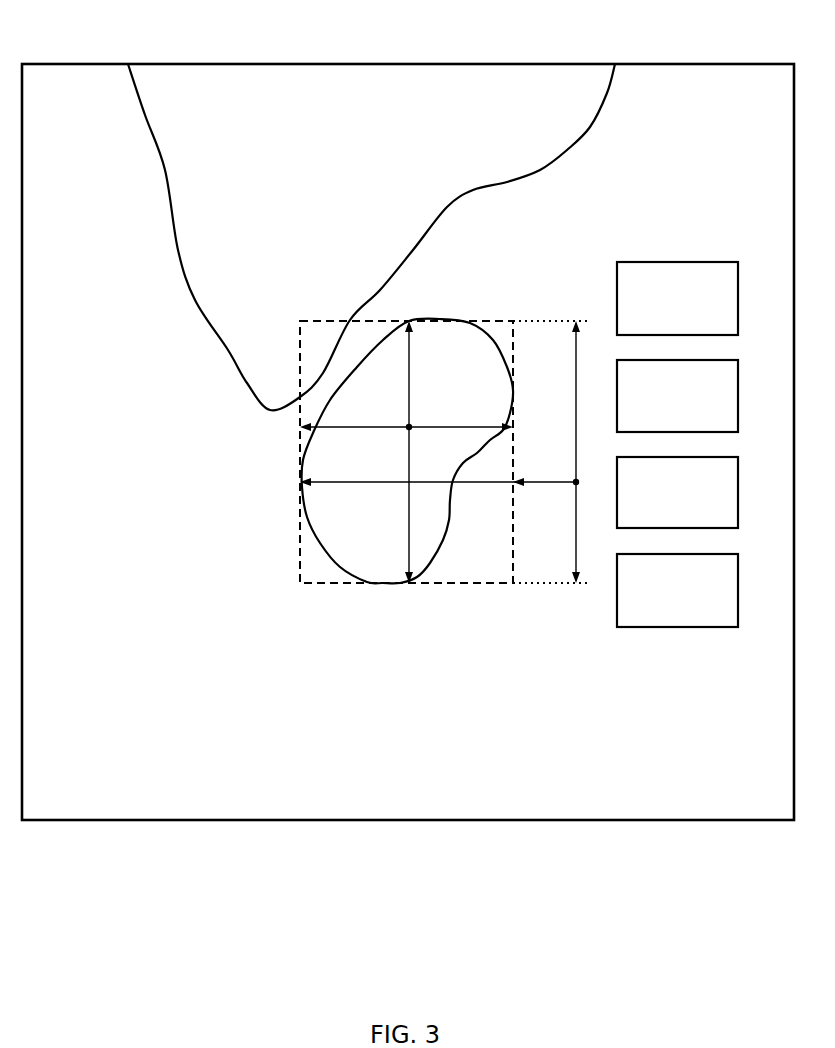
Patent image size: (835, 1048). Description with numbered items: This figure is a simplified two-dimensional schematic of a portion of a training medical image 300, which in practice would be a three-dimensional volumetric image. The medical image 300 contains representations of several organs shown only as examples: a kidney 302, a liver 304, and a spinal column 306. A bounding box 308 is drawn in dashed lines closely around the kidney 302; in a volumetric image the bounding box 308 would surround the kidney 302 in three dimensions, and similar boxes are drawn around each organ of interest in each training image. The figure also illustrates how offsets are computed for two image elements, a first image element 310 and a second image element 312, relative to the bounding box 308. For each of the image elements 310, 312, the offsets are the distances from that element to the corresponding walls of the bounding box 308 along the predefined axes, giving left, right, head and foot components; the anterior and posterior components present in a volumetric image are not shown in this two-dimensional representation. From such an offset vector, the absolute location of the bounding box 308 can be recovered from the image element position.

The medical image 300 is at (675, 63).
The kidney 302 is at (430, 560).
The liver 304 is at (593, 128).
The spinal column 306 is at (710, 262).
The bounding box 308 is at (490, 318).
The image element v1 310 is at (407, 431).
The image element v2 312 is at (578, 483).